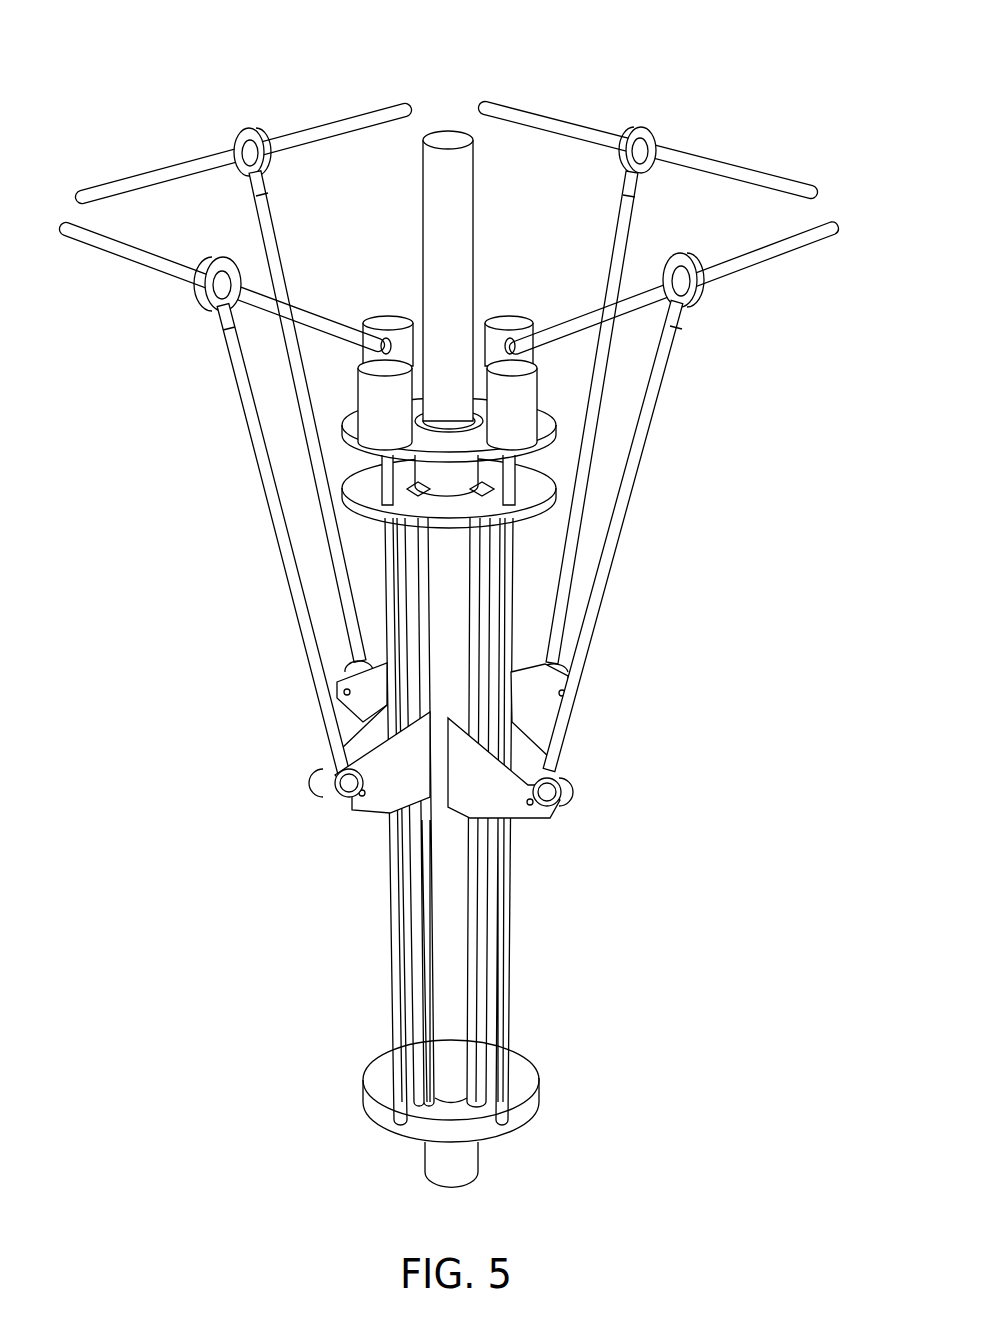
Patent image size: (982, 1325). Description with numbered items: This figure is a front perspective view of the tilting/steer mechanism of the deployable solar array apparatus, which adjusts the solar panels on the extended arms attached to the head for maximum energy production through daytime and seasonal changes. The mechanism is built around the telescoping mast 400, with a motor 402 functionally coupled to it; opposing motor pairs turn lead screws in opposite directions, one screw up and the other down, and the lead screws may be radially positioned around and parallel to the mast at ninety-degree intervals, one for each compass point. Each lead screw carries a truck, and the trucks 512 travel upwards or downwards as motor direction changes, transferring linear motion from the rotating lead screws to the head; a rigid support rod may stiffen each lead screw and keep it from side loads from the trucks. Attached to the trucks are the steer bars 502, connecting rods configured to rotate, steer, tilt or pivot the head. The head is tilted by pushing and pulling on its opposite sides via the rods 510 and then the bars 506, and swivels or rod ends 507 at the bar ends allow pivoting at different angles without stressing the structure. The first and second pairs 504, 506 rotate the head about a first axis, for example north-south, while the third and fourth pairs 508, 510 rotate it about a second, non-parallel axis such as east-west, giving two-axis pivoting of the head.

The telescoping mast 400 is at (448, 962).
The motor 402 is at (524, 328).
The steer bars 502 is at (153, 177).
The first pair 504 is at (656, 548).
The second pair 506 is at (238, 108).
The swivels or rod ends 507 is at (213, 283).
The third pair 508 is at (692, 120).
The rods 510 is at (235, 480).
The trucks 512 is at (475, 777).